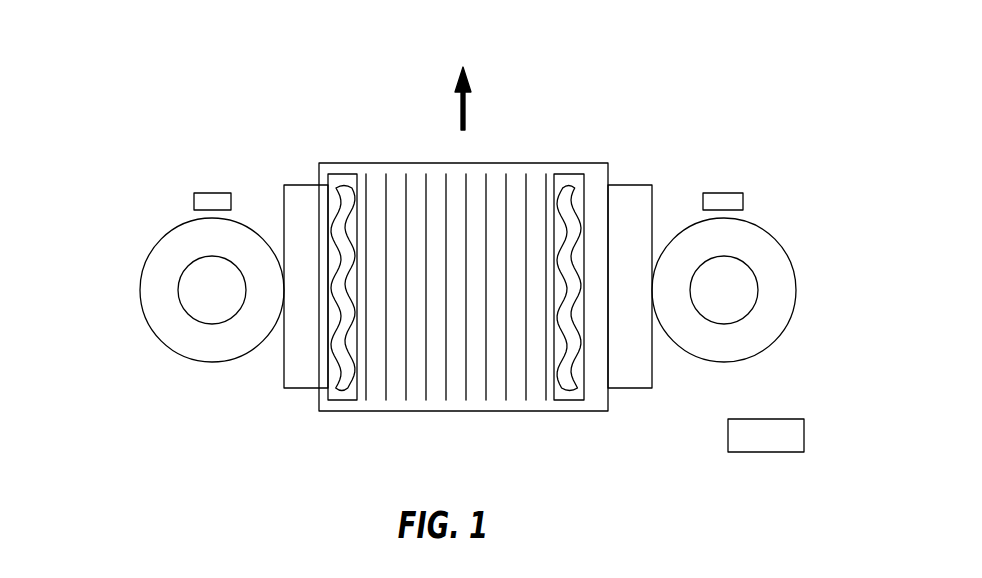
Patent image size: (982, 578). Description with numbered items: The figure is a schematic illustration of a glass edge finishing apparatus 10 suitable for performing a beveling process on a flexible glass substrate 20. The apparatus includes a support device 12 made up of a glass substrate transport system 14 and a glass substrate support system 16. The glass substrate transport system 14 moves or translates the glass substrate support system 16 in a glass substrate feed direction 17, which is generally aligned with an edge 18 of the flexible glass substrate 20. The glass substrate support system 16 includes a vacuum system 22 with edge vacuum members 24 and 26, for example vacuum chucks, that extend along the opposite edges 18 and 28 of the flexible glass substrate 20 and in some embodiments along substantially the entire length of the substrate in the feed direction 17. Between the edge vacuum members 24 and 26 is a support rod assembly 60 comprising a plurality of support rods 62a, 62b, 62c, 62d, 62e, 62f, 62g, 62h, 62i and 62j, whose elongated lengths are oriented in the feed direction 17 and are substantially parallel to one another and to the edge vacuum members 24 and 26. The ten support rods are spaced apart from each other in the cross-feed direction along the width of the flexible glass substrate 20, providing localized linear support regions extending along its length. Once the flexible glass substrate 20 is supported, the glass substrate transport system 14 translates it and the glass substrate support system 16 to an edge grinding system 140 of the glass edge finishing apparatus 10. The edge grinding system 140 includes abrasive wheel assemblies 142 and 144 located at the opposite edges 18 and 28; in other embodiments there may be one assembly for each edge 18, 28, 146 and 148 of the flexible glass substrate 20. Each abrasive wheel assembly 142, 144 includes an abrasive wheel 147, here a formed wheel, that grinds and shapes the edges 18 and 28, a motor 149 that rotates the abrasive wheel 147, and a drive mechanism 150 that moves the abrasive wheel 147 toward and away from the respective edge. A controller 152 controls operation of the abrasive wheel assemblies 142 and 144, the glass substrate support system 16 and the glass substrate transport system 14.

The glass edge finishing apparatus 10 is at (665, 72).
The support device 12 is at (488, 124).
The glass substrate transport system 14 is at (401, 151).
The glass substrate support system 16 is at (321, 363).
The glass substrate feed direction 17 is at (459, 104).
The edge 18 is at (653, 211).
The flexible glass substrate 20 is at (625, 366).
The vacuum system 22 is at (614, 173).
The edge vacuum member 24 is at (340, 403).
The edge vacuum member 26 is at (593, 388).
The edge 28 is at (283, 212).
The support rod assembly 60 is at (514, 164).
The support rod 62a is at (366, 400).
The support rod 62b is at (386, 400).
The support rod 62c is at (406, 400).
The support rod 62d is at (426, 400).
The support rod 62e is at (446, 400).
The support rod 62f is at (466, 400).
The support rod 62g is at (486, 400).
The support rod 62h is at (506, 400).
The support rod 62i is at (526, 400).
The support rod 62j is at (546, 400).
The edge grinding system 140 is at (789, 186).
The abrasive wheel assembly 142 is at (113, 326).
The abrasive wheel assembly 144 is at (805, 306).
The edge 146 is at (304, 185).
The abrasive wheel 147 is at (170, 247).
The edge 148 is at (573, 405).
The motor 149 is at (203, 300).
The drive mechanism 150 is at (207, 193).
The controller 152 is at (774, 436).